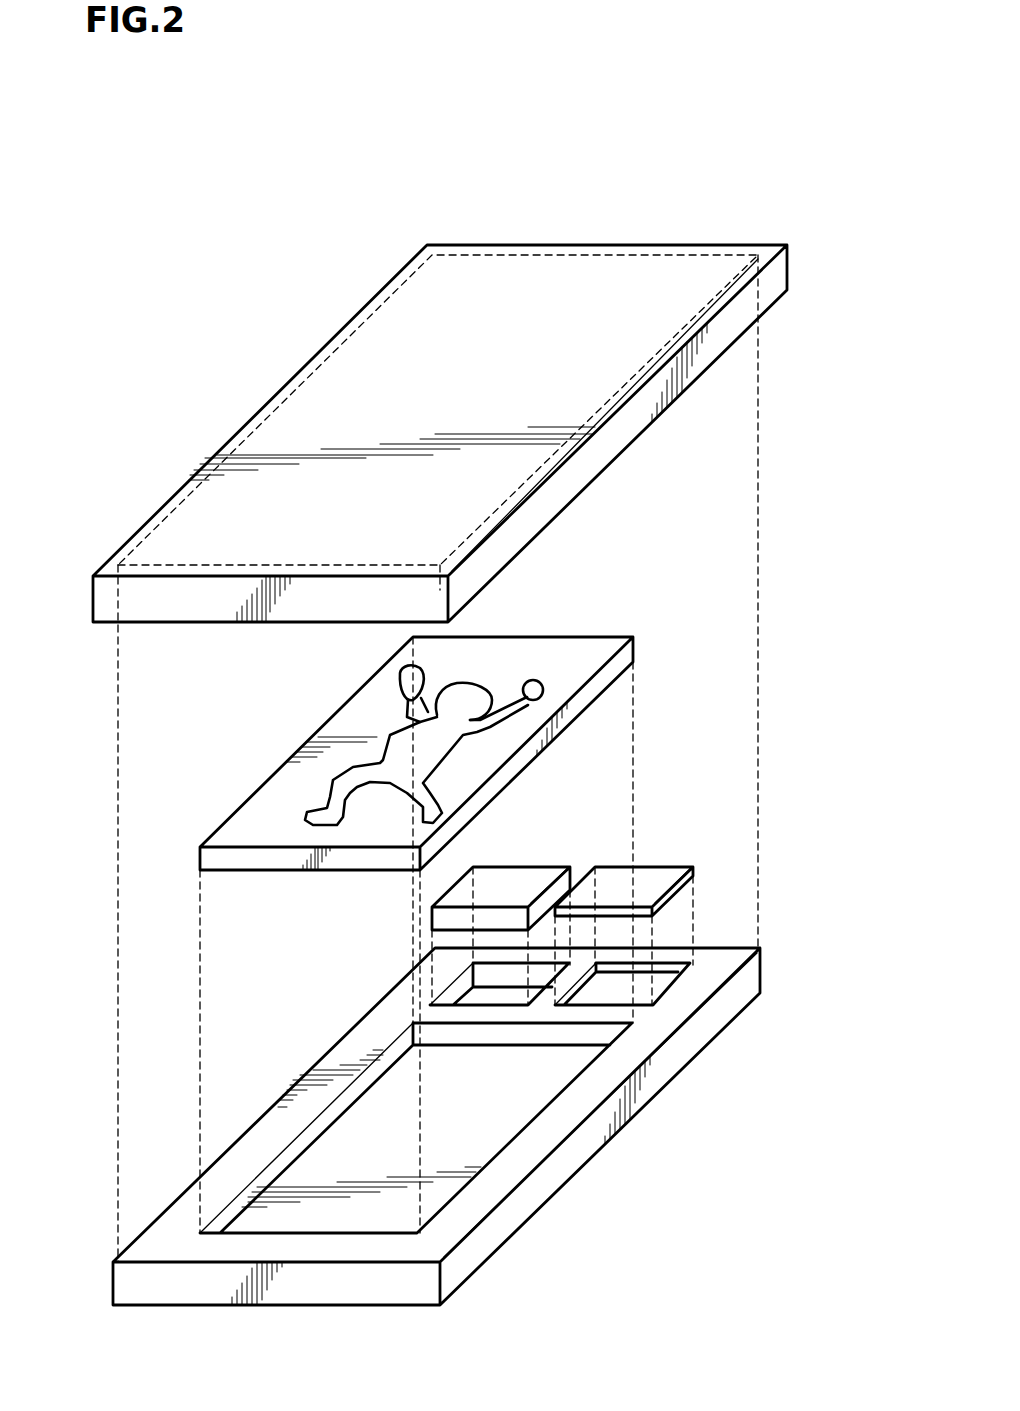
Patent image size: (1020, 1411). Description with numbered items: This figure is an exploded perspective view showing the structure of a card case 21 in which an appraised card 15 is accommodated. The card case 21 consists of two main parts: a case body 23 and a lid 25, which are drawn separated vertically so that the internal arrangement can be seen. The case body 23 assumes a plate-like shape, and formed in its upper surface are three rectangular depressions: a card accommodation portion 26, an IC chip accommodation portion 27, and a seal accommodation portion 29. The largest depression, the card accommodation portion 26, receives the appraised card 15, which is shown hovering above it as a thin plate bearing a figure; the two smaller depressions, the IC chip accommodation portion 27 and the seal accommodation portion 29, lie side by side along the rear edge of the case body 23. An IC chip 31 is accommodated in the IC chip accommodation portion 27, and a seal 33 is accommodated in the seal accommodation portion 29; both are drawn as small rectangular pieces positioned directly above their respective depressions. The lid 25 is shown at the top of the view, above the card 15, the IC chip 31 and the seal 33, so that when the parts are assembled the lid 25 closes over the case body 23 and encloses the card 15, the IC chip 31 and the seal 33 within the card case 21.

The card case 21 is at (274, 378).
The lid 25 is at (703, 253).
The appraised card 15 is at (567, 637).
The IC chip 31 is at (507, 875).
The seal 33 is at (650, 877).
The case body 23 is at (673, 1059).
The card accommodation portion 26 is at (487, 1143).
The IC chip accommodation portion 27 is at (462, 988).
The seal accommodation portion 29 is at (660, 978).